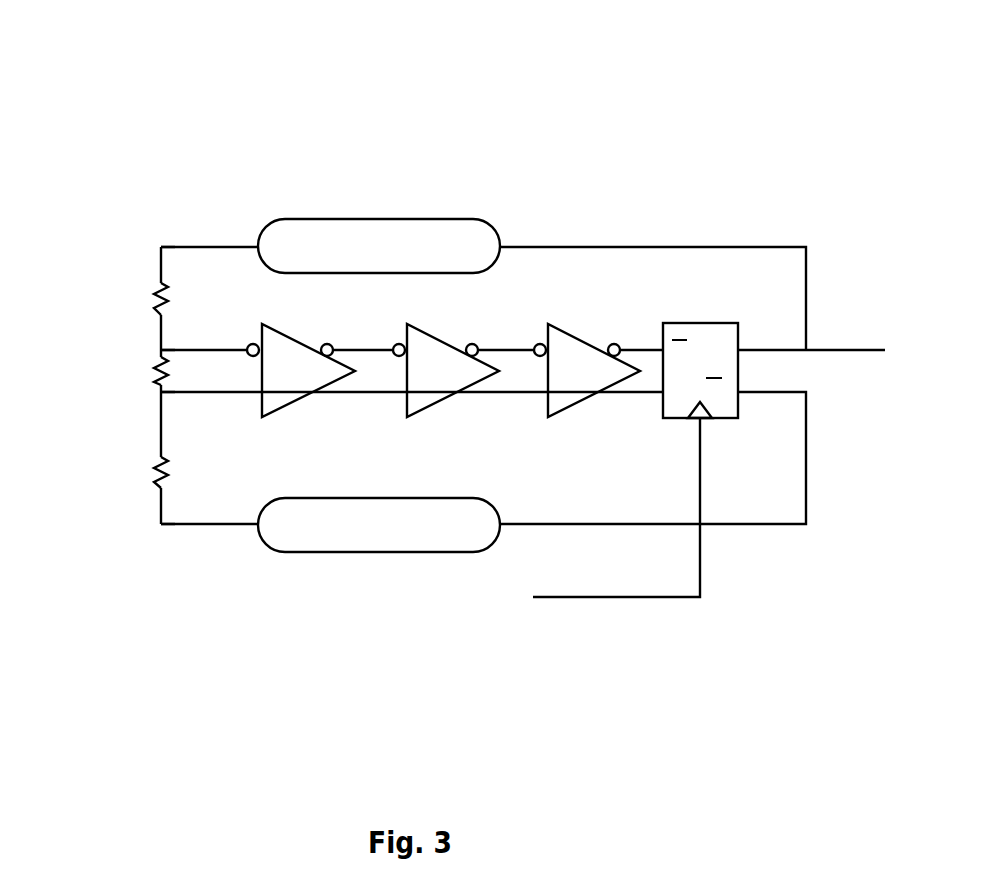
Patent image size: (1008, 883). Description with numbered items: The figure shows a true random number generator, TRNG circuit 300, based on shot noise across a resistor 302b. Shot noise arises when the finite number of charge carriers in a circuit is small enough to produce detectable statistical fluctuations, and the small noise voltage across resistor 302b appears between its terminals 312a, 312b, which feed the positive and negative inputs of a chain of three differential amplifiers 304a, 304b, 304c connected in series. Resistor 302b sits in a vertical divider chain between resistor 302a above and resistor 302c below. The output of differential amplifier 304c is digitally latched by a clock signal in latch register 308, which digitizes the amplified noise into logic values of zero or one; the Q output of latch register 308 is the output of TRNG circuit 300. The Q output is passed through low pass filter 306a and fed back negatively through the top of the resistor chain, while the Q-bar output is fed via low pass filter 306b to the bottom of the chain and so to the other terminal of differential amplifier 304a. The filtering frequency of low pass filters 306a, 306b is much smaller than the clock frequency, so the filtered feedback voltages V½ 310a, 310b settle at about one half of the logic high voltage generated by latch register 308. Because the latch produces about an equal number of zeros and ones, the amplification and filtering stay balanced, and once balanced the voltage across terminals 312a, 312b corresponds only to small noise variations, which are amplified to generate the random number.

The TRNG circuit 300 is at (606, 96).
The resistor 302a is at (170, 296).
The resistor 302b is at (170, 368).
The resistor 302c is at (170, 468).
The differential amplifier 304a is at (290, 335).
The differential amplifier 304b is at (435, 335).
The differential amplifier 304c is at (578, 334).
The low pass filter 306a is at (312, 219).
The low pass filter 306b is at (312, 552).
The latch register 308 is at (673, 323).
The voltage V½ 310a is at (148, 250).
The voltage V½ 310b is at (146, 521).
The terminal of resistor 312a is at (143, 346).
The terminal of resistor 312b is at (143, 395).